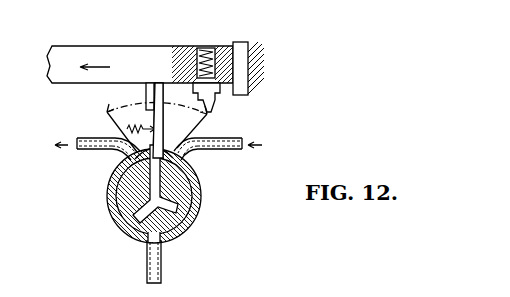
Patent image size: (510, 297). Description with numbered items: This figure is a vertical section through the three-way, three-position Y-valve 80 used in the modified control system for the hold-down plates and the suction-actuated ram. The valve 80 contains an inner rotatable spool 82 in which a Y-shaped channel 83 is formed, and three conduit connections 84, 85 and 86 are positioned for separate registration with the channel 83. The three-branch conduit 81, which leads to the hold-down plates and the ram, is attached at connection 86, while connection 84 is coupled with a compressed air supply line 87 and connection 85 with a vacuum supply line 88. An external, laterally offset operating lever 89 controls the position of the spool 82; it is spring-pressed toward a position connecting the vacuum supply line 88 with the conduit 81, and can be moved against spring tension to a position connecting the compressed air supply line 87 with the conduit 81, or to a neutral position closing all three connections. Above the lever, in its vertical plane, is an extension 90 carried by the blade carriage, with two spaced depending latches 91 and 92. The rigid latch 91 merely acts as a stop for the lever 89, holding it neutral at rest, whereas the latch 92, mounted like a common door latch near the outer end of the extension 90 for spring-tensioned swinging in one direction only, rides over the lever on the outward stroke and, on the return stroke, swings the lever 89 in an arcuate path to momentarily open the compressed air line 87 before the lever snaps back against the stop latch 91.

The Y-valve 80 is at (201, 214).
The three-branch conduit 81 is at (147, 270).
The inner rotatable spool 82 is at (123, 193).
The Y-shaped channel 83 is at (157, 186).
The conduit connection 84 is at (187, 155).
The conduit connection 85 is at (134, 158).
The conduit connection 86 is at (162, 242).
The compressed air supply line 87 is at (217, 139).
The vacuum supply line 88 is at (84, 138).
The operating lever 89 is at (163, 124).
The extension 90 is at (88, 47).
The latch 91 is at (145, 92).
The latch 92 is at (213, 100).